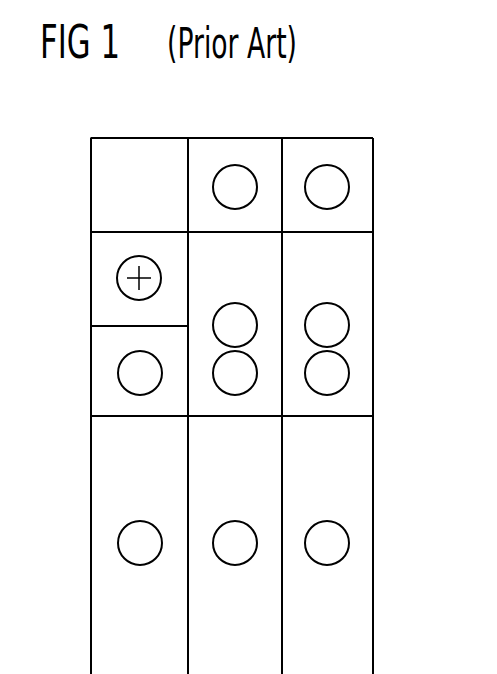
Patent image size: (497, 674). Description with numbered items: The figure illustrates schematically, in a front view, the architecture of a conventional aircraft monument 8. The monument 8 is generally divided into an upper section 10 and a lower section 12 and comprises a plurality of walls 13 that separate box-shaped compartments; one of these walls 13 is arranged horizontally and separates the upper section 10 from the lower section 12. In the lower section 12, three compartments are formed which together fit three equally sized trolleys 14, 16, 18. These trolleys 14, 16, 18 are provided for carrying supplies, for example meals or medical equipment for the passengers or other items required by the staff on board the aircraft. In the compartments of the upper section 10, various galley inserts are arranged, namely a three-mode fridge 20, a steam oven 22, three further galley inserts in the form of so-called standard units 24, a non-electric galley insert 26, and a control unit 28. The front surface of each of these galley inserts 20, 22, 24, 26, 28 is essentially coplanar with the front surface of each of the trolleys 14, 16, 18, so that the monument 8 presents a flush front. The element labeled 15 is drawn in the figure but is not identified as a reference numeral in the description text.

The aircraft monument 8 is at (418, 165).
The upper section 10 is at (373, 312).
The lower section 12 is at (373, 520).
The walls 13 is at (355, 414).
The trolley 14 is at (358, 604).
The field device layer 15 is at (237, 420).
The trolley 16 is at (265, 645).
The trolley 18 is at (108, 638).
The 3-mode-fridge 20 is at (362, 268).
The steam oven 22 is at (268, 271).
The standard units 24 is at (237, 148).
The non-electric galley insert 26 is at (100, 279).
The control unit 28 is at (144, 148).